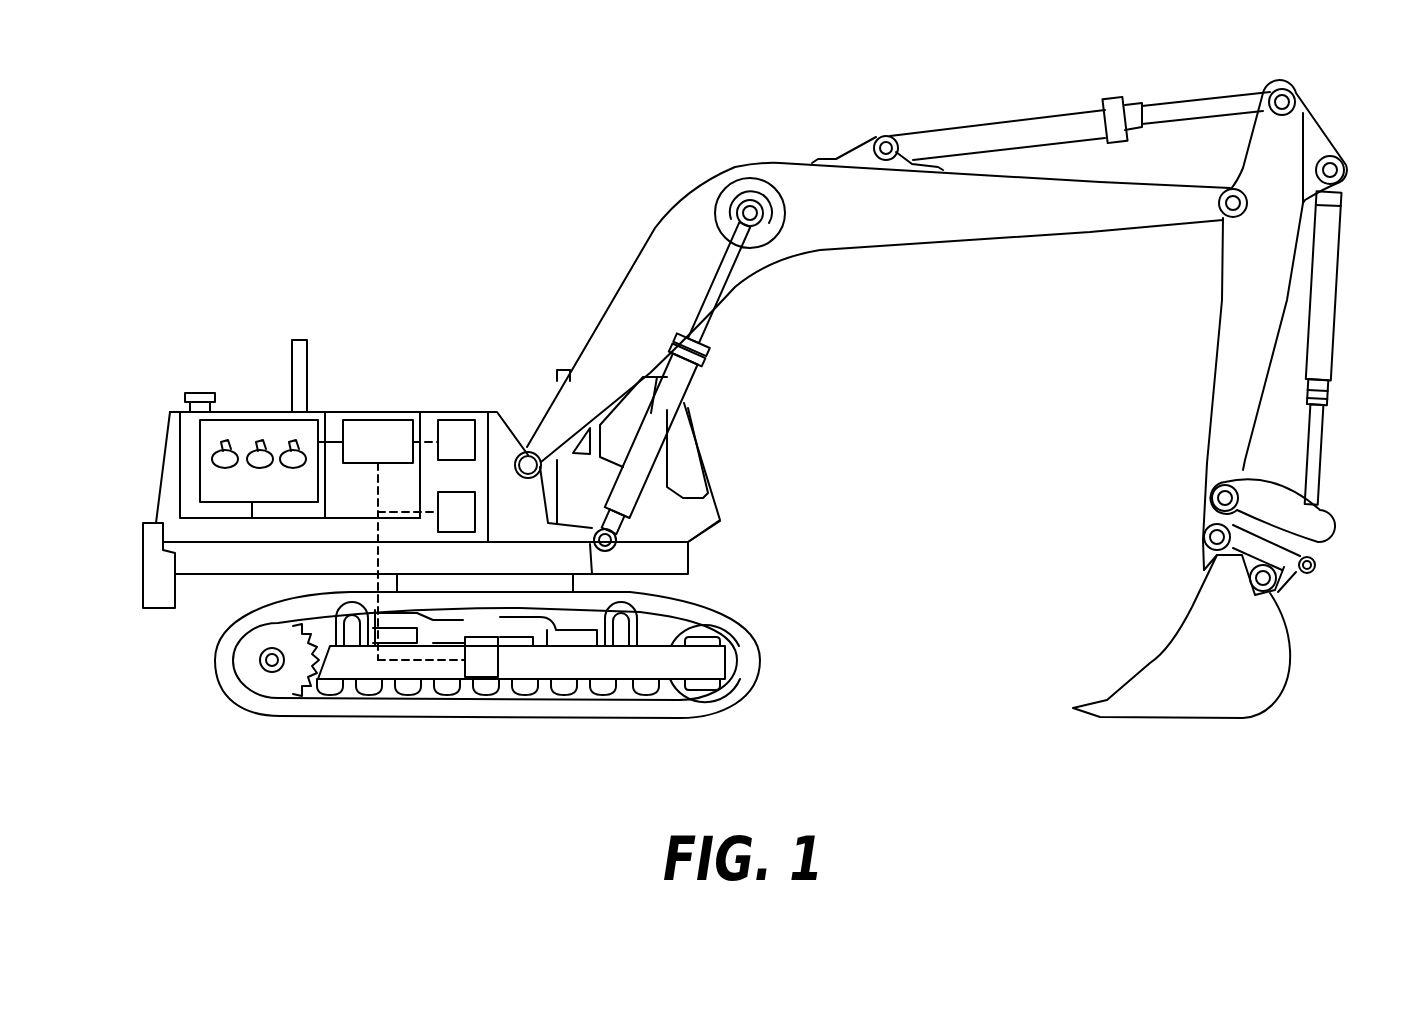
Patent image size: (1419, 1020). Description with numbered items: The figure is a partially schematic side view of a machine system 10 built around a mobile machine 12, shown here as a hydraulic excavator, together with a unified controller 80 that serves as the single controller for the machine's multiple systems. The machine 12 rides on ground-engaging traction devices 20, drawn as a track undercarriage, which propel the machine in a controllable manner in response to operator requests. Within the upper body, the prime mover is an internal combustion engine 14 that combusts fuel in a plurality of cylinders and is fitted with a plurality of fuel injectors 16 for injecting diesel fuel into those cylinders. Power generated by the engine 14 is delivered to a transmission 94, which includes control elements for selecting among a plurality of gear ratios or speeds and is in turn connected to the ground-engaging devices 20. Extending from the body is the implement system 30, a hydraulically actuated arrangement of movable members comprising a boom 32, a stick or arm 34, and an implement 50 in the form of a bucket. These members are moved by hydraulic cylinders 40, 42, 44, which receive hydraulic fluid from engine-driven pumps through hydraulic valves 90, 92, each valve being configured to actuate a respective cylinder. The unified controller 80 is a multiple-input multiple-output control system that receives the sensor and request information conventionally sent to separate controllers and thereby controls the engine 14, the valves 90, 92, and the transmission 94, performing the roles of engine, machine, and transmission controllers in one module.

The machine system 10 is at (258, 192).
The mobile machine 12 is at (173, 423).
The internal combustion engine 14 is at (262, 427).
The fuel injectors 16 is at (214, 447).
The ground-engaging traction devices 20 is at (728, 613).
The implement system 30 is at (542, 237).
The boom 32 is at (1013, 227).
The stick or arm 34 is at (1235, 290).
The hydraulic cylinder 40 is at (680, 413).
The hydraulic cylinder 42 is at (1043, 130).
The hydraulic cylinder 44 is at (1335, 257).
The implement 50 is at (1267, 660).
The unified controller 80 is at (357, 427).
The hydraulic valve 90 is at (447, 430).
The hydraulic valve 92 is at (447, 517).
The transmission 94 is at (487, 667).